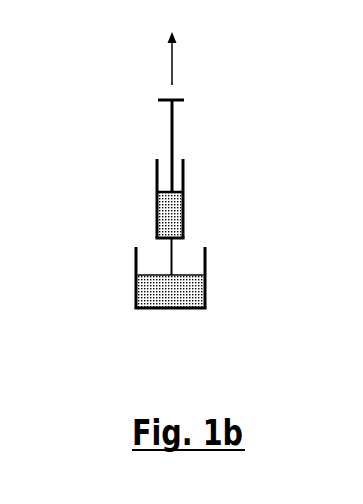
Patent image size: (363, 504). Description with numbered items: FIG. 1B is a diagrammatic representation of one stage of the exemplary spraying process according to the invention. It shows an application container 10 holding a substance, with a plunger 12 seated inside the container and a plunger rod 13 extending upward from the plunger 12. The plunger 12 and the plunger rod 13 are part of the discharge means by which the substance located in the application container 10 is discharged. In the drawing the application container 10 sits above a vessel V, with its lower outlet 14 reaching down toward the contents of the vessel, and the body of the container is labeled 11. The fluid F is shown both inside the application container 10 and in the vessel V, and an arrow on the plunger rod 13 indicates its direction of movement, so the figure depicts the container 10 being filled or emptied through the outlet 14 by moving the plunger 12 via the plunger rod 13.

The application container 10 is at (162, 153).
The barrel / reservoir 11 is at (184, 177).
The plunger 12 is at (156, 172).
The plunger rod 13 is at (170, 148).
The needle / outlet 14 is at (174, 252).
The fluid F is at (184, 210).
The vessel / container V is at (134, 255).